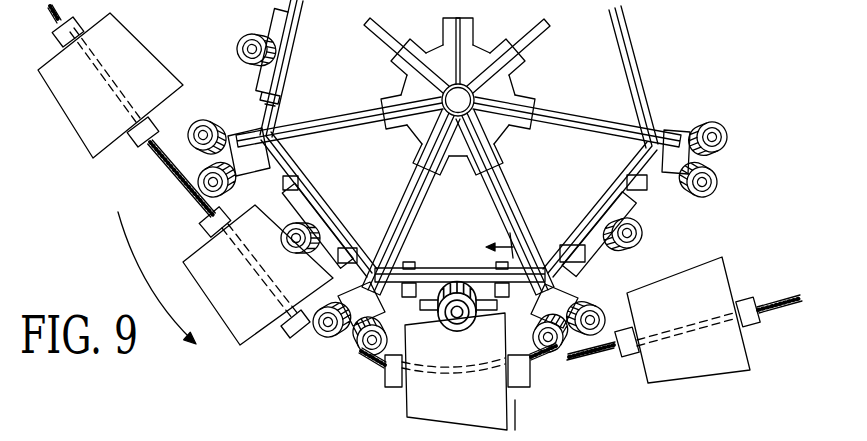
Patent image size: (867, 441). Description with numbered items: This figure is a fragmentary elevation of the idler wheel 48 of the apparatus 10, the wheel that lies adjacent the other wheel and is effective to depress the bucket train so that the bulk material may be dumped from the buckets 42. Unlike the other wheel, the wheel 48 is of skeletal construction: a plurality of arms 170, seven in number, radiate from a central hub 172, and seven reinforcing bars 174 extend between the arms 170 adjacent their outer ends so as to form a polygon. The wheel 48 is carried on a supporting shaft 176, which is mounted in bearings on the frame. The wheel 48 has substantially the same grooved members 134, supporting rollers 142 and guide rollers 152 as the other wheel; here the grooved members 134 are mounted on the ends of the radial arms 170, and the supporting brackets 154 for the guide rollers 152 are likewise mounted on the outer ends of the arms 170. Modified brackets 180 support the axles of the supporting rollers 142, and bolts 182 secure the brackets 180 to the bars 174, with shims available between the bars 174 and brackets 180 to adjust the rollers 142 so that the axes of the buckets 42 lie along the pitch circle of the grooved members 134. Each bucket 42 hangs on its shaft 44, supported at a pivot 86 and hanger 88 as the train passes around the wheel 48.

The amusement ride apparatus 10 is at (489, 241).
The bucket 42 is at (72, 112).
The car shaft 44 is at (770, 300).
The wheel 48 is at (228, 25).
The pivot pin 86 is at (56, 43).
The hanger rod 88 is at (148, 150).
The grooved member 134 is at (348, 348).
The supporting roller 142 is at (236, 48).
The guide roller 152 is at (192, 179).
The supporting bracket 154 is at (688, 130).
The arm 170 is at (322, 118).
The hub 172 is at (518, 85).
The reinforcing bar 174 is at (305, 27).
The supporting shaft 176 is at (472, 56).
The modified bracket 180 is at (248, 79).
The bolt 182 is at (172, 440).